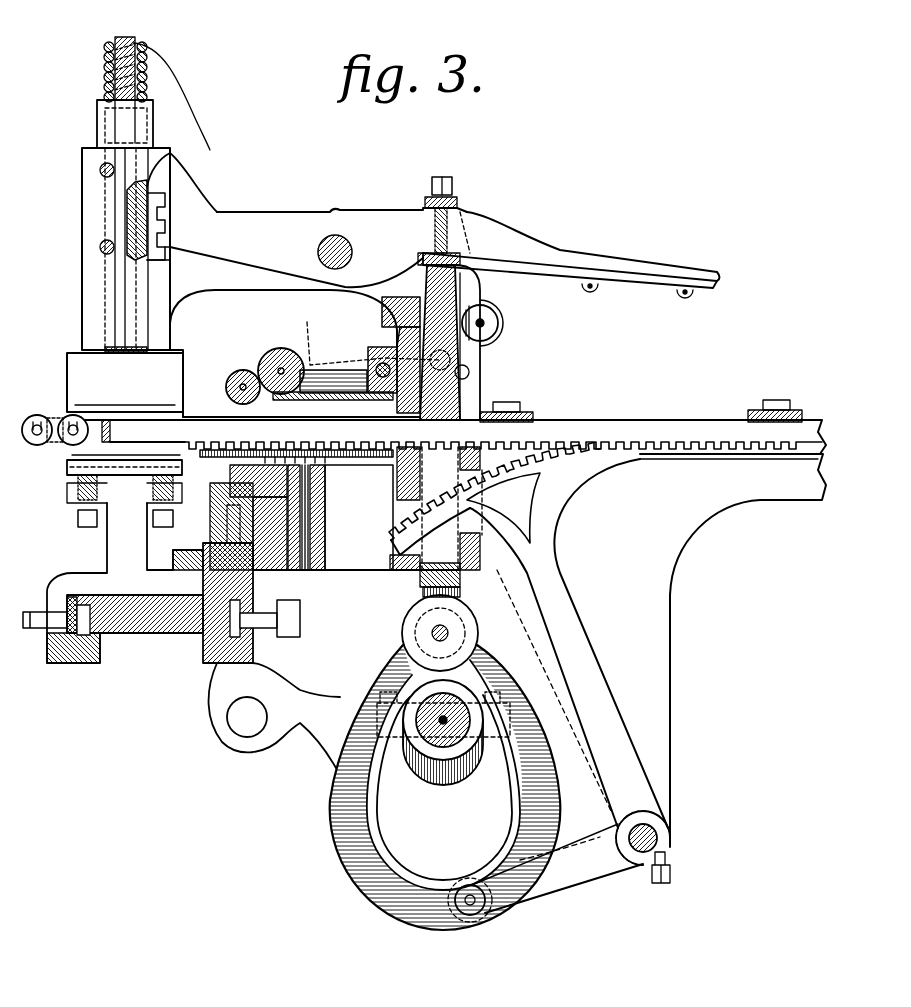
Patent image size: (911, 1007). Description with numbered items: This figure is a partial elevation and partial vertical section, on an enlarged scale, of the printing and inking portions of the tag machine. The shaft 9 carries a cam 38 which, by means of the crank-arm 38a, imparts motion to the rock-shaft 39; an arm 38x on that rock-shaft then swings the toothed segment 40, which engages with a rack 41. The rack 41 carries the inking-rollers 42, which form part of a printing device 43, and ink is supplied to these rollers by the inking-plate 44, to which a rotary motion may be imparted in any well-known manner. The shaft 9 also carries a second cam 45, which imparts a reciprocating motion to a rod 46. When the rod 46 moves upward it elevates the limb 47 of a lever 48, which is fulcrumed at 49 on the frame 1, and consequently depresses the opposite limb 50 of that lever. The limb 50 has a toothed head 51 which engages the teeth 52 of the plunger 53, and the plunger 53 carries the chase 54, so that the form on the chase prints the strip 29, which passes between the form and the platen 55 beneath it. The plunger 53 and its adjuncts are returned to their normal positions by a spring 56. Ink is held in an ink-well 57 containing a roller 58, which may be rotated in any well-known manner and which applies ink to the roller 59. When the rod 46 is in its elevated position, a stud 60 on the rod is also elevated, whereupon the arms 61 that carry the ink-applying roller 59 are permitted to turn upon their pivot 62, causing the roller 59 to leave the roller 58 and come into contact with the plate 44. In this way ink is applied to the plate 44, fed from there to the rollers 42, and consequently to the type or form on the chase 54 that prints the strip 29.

The frame 1 is at (436, 568).
The shaft 9 is at (442, 722).
The strip 29 is at (72, 458).
The cam 38 is at (417, 857).
The crank-arm 38a is at (545, 873).
The arm 38x is at (573, 636).
The rock-shaft 39 is at (657, 843).
The toothed segment 40 is at (543, 463).
The rack 41 is at (697, 425).
The inking-rollers 42 is at (72, 420).
The printing device 43 is at (404, 200).
The inking-plate 44 is at (343, 450).
The cam 45 is at (443, 767).
The rod 46 is at (480, 288).
The limb 47 is at (657, 255).
The lever 48 is at (490, 235).
The fulcrum 49 is at (320, 255).
The limb 50 is at (248, 232).
The toothed head 51 is at (150, 217).
The teeth 52 is at (133, 220).
The plunger 53 is at (147, 187).
The chase 54 is at (132, 413).
The platen 55 is at (78, 470).
The spring 56 is at (108, 74).
The ink-well 57 is at (323, 357).
The roller 58 is at (270, 353).
The roller 59 is at (230, 383).
The stud 60 is at (493, 348).
The arms 61 is at (470, 370).
The pivot 62 is at (380, 360).